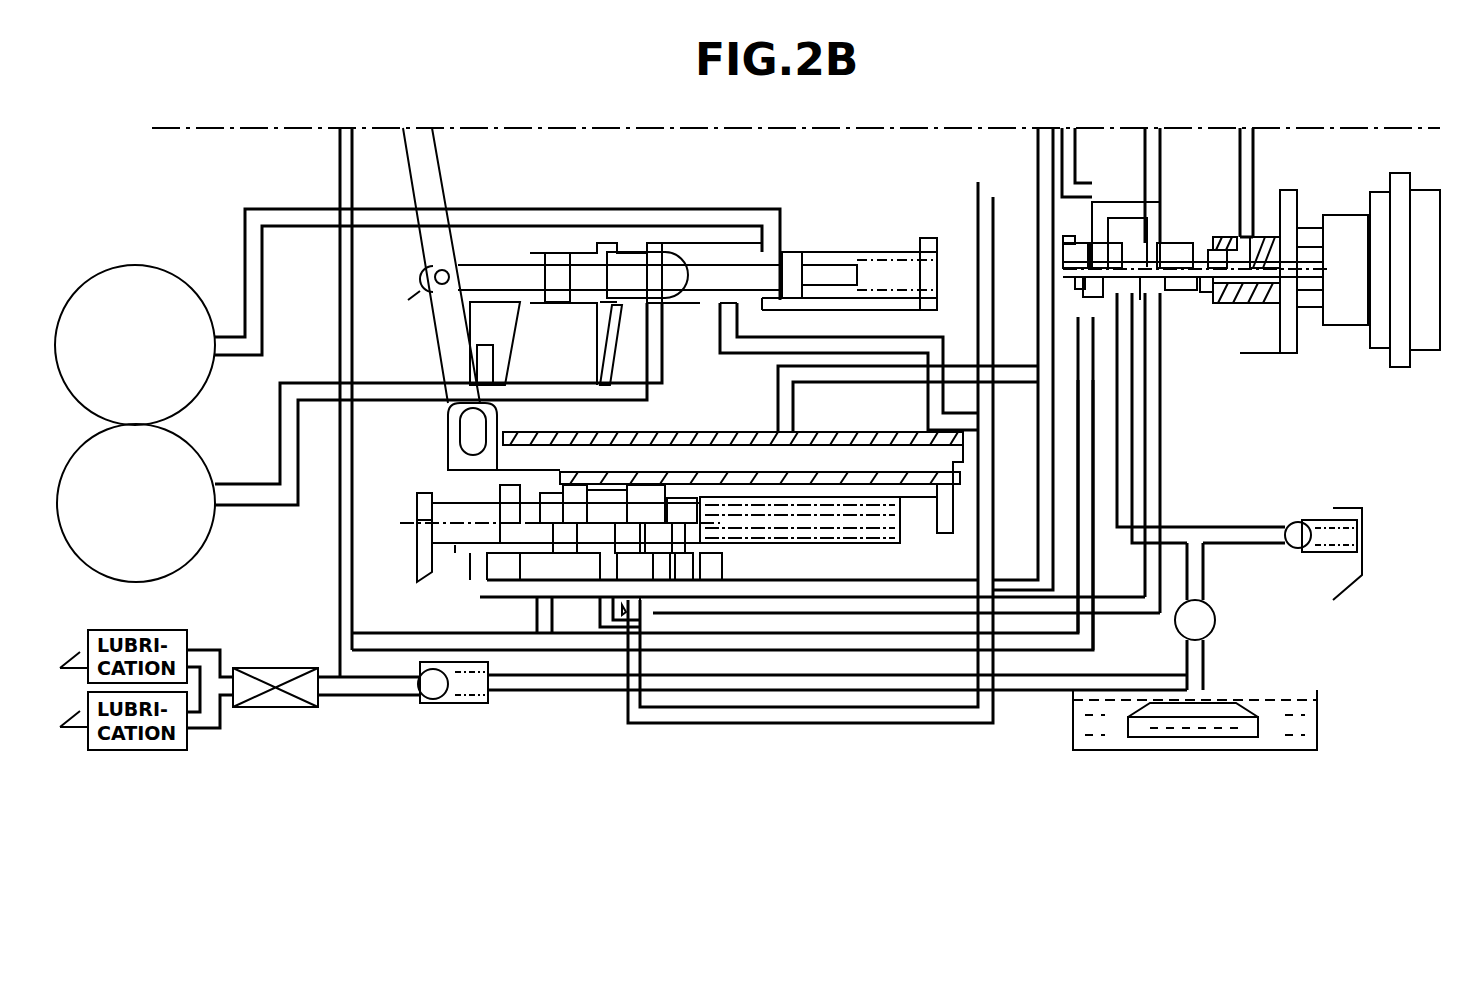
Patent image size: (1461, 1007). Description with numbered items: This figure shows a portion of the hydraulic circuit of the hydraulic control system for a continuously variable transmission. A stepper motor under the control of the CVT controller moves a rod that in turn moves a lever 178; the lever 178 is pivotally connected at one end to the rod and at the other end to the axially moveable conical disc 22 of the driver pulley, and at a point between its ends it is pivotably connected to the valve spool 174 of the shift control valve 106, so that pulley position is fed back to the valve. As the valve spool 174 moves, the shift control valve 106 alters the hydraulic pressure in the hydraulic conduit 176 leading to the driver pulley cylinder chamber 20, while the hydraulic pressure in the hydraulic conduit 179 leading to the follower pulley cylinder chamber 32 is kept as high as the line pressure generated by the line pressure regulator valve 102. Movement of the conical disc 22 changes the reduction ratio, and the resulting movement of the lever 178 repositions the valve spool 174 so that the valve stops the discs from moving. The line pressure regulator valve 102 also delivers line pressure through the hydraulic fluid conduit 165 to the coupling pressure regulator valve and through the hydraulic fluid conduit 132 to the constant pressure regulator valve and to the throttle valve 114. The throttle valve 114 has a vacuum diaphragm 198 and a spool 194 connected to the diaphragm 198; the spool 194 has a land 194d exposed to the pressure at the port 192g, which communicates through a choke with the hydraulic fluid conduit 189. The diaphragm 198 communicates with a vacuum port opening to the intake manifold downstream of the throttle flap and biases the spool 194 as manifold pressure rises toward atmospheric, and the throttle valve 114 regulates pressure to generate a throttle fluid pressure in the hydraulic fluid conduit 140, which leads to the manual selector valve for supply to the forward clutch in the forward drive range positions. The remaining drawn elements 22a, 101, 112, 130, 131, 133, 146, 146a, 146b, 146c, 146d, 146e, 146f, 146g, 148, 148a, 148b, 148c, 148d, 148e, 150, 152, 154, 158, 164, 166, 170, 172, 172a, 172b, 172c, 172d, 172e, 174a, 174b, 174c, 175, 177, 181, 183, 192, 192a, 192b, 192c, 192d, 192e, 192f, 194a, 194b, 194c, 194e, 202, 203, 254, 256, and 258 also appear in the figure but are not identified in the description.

The driver pulley cylinder chamber 20 is at (197, 545).
The follower pulley cylinder chamber 32 is at (196, 398).
The conical disc 22 is at (507, 316).
The pulley flange 22a is at (494, 356).
The valve 101 is at (1222, 611).
The line pressure regulator valve 102 is at (423, 599).
The shift control valve 106 is at (790, 210).
The pulley body 112 is at (408, 300).
The throttle valve 114 is at (1244, 372).
The oil reservoir 130 is at (1318, 706).
The filter 131 is at (1212, 702).
The hydraulic fluid conduit 132 is at (845, 590).
The oil pump 133 is at (1308, 512).
The hydraulic fluid conduit 140 is at (1076, 140).
The valve spool 146 is at (492, 530).
The spool end 146a is at (425, 565).
The spool land 146b is at (472, 560).
The spool land 146c is at (532, 490).
The passage 146d is at (550, 600).
The passage 146e is at (580, 600).
The spool groove 146f is at (640, 590).
The spool land 146g is at (700, 495).
The valve sleeve 148 is at (432, 540).
The sleeve port 148a is at (456, 548).
The sleeve end 148b is at (417, 505).
The sleeve port 148c is at (562, 480).
The sleeve port 148d is at (640, 492).
The sleeve port 148e is at (676, 545).
The spring seat 150 is at (885, 500).
The valve cover 152 is at (800, 440).
The spring 154 is at (880, 515).
The valve housing end 158 is at (965, 452).
The passage 164 is at (545, 640).
The hydraulic fluid conduit 165 is at (688, 723).
The port 166 is at (520, 582).
The port 170 is at (712, 612).
The shift shaft 172 is at (855, 255).
The shaft portion 172a is at (606, 315).
The shaft portion 172b is at (656, 300).
The passage 172c is at (725, 338).
The shaft shoulder 172d is at (768, 305).
The shaft end 172e is at (925, 300).
The valve spool 174 is at (480, 268).
The shaft collar 174a is at (557, 265).
The shaft collar 174b is at (658, 256).
The shaft collar 174c is at (792, 262).
The collar 175 is at (925, 245).
The hydraulic conduit 176 is at (308, 402).
The lever 177 is at (614, 335).
The lever 178 is at (418, 178).
The hydraulic conduit 179 is at (296, 226).
The pin 181 is at (434, 275).
The guide 183 is at (452, 430).
The hydraulic fluid conduit 189 is at (1240, 142).
The valve spool 192 is at (1160, 245).
The spool land 192a is at (1075, 282).
The spool land 192b is at (1093, 298).
The spool groove 192c is at (1110, 300).
The spool groove 192d is at (1150, 300).
The spool land 192e is at (1175, 292).
The spool land 192f is at (1210, 295).
The port 192g is at (1258, 298).
The spool 194 is at (1076, 268).
The sleeve port 194a is at (1077, 255).
The sleeve port 194b is at (1083, 262).
The sleeve port 194c is at (1178, 258).
The land 194d is at (1218, 248).
The sleeve end 194e is at (1285, 240).
The vacuum diaphragm 198 is at (1424, 182).
The valve body 202 is at (1110, 215).
The valve plate 203 is at (1253, 190).
The oil passage 254 is at (340, 292).
The lubrication valve 256 is at (278, 668).
The lubrication pump 258 is at (422, 700).